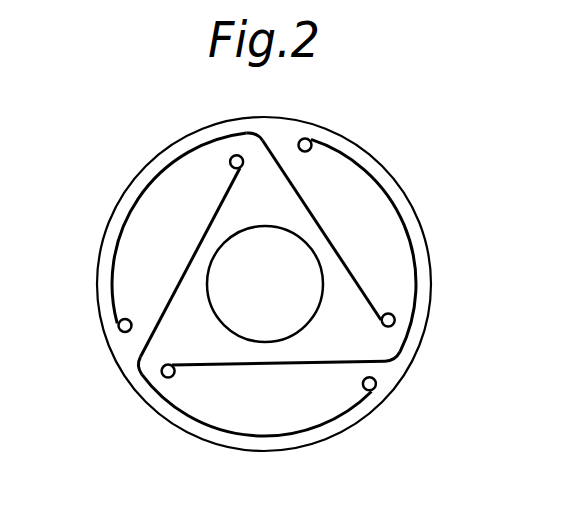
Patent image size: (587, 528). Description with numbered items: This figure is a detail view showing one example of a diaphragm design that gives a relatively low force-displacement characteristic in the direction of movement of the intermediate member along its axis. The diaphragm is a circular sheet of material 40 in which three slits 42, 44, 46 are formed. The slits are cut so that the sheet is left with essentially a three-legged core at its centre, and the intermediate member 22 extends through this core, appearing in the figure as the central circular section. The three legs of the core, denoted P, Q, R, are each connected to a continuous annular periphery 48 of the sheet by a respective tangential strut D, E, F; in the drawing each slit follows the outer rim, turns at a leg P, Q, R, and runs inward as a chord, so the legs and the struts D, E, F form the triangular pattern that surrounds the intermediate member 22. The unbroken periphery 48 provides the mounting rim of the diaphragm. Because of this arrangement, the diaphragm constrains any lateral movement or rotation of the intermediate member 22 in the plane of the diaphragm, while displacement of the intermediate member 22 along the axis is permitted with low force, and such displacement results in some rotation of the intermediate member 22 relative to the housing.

The circular sheet of material 40 is at (362, 438).
The continuous annular periphery 48 is at (423, 230).
The intermediate member 22 is at (290, 270).
The slit 42 is at (225, 204).
The slit 44 is at (325, 250).
The slit 46 is at (204, 330).
The tangential strut D is at (145, 225).
The tangential strut E is at (397, 272).
The tangential strut F is at (279, 417).
The leg P is at (262, 178).
The leg Q is at (358, 337).
The leg R is at (188, 330).